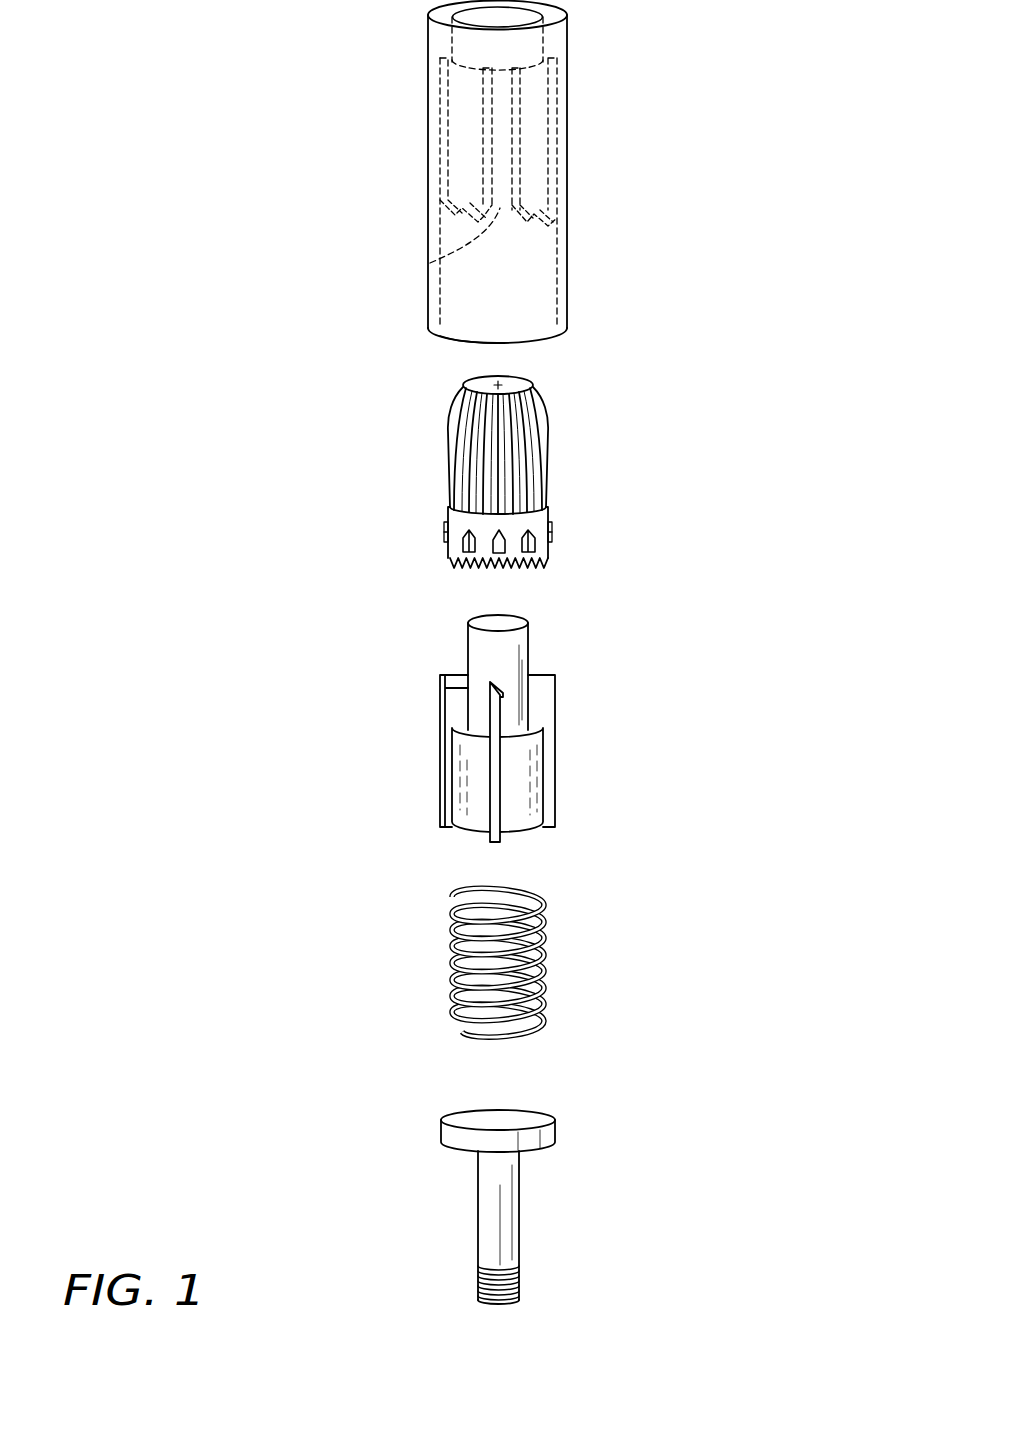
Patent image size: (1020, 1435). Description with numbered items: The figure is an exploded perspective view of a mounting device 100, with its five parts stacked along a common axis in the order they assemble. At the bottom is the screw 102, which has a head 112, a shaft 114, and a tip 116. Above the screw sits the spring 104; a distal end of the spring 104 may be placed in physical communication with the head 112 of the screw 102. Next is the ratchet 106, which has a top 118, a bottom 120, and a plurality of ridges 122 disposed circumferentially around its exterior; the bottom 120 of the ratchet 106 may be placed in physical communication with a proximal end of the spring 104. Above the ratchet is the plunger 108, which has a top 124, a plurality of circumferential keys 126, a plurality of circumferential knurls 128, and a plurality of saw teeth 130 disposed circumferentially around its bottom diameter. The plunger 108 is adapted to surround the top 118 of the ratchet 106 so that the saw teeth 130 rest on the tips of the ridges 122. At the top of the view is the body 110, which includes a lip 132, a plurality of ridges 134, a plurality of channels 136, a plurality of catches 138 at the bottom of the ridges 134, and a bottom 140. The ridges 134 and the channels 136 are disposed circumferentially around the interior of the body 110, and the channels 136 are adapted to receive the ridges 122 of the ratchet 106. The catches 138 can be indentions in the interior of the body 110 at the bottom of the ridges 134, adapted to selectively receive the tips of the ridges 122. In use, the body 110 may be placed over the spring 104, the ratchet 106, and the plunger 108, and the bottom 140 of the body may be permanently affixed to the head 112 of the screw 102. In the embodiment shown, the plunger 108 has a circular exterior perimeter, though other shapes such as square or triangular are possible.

The mounting device 100 is at (803, 104).
The screw 102 is at (524, 1210).
The spring 104 is at (552, 950).
The ratchet 106 is at (465, 655).
The plunger 108 is at (446, 450).
The body 110 is at (570, 271).
The head 112 is at (512, 1116).
The shaft 114 is at (478, 1208).
The tip 116 is at (480, 1283).
The top 118 is at (510, 662).
The bottom 120 is at (520, 783).
The ridges 122 is at (545, 705).
The top 124 is at (517, 381).
The circumferential keys 126 is at (535, 543).
The circumferential knurls 128 is at (530, 451).
The saw teeth 130 is at (475, 565).
The lip 132 is at (546, 44).
The ridges 134 is at (462, 127).
The channels 136 is at (433, 261).
The catches 138 is at (440, 205).
The bottom 140 is at (452, 343).